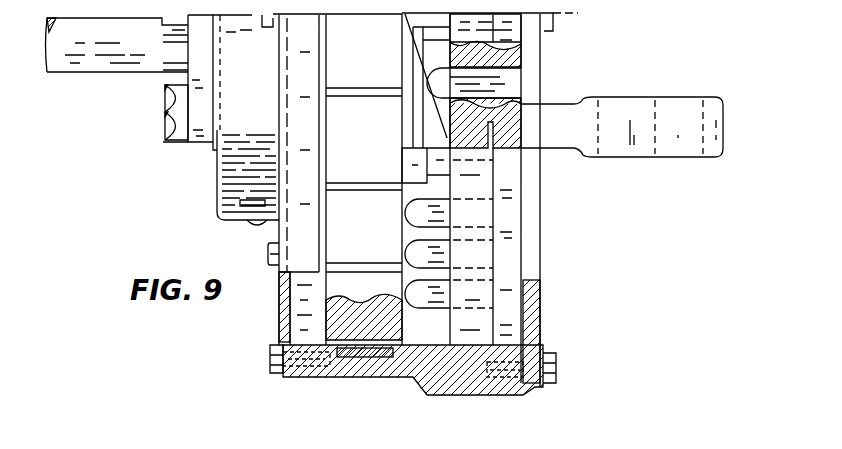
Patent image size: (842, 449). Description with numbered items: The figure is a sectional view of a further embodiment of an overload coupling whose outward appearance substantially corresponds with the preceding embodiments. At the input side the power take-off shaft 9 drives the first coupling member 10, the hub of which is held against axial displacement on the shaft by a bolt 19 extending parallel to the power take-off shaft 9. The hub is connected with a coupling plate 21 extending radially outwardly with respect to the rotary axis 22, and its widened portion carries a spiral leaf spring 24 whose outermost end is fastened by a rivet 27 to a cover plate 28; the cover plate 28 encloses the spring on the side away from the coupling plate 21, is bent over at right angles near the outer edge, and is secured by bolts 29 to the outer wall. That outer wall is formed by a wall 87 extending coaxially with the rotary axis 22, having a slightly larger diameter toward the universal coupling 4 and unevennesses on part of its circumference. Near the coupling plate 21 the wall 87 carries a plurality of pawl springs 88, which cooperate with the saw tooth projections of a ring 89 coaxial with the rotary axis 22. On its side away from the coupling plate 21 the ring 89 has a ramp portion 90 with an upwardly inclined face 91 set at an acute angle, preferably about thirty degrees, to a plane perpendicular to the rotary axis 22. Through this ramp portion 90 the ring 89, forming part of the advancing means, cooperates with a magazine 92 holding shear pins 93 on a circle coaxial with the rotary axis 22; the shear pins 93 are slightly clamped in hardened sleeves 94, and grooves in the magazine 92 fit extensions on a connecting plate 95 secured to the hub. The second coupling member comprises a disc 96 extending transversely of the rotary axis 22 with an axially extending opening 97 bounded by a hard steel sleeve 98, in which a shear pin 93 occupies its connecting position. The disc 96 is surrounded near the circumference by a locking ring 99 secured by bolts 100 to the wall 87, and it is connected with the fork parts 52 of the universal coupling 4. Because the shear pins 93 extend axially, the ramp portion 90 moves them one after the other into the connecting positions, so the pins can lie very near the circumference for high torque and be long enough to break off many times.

The universal joint 4 is at (622, 126).
The power take-off shaft 9 is at (88, 72).
The first coupling member 10 is at (192, 154).
The bolt 19 is at (165, 125).
The coupling plate 21 is at (285, 328).
The rotary axis 22 is at (130, 18).
The spiral leaf spring 24 is at (222, 187).
The rivet 27 is at (247, 225).
The cover plate 28 is at (280, 305).
The bolts 29 is at (268, 250).
The fork parts 52 is at (660, 158).
The wall 87 is at (387, 372).
The pawl springs 88 is at (340, 368).
The ring 89 is at (326, 108).
The ramp portion 90 is at (410, 130).
The inclined face 91 is at (420, 76).
The magazine 92 is at (488, 233).
The shear pins 93 is at (405, 106).
The hardened sleeves 94 is at (448, 108).
The connecting plate 95 is at (420, 45).
The disc 96 is at (517, 270).
The opening 97 is at (521, 74).
The hard steel sleeve 98 is at (521, 100).
The locking ring 99 is at (535, 316).
The bolts 100 is at (553, 358).